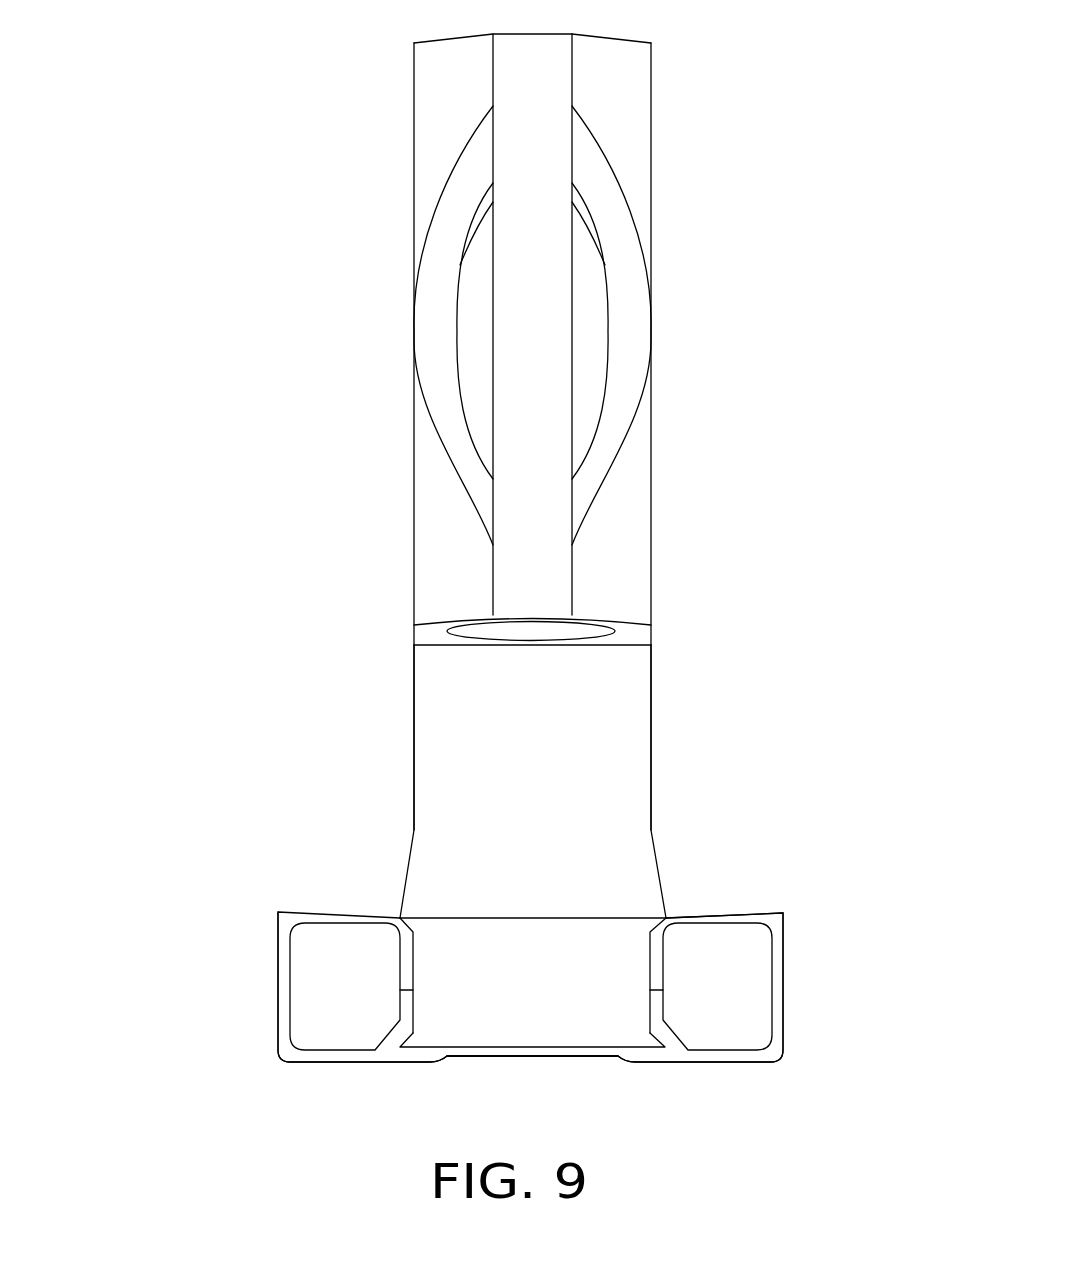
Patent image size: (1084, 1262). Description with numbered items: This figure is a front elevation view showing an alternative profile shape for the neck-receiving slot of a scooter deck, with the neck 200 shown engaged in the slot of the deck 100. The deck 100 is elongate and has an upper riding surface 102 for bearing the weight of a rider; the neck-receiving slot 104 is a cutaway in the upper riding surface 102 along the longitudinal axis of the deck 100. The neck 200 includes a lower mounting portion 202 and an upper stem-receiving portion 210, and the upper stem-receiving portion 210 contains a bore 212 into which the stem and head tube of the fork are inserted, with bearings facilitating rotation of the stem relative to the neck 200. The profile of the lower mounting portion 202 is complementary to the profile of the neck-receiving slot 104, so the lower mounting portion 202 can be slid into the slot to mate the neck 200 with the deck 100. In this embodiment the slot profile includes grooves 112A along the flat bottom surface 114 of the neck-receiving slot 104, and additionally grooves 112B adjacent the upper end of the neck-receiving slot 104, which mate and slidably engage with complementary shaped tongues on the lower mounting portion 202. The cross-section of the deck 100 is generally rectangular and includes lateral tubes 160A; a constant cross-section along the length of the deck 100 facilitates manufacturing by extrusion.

The upper stem-receiving portion 210 is at (430, 43).
The bore 212 is at (610, 633).
The neck 200 is at (413, 728).
The lower mounting portion 202 is at (390, 903).
The deck 100 is at (297, 897).
The upper riding surface 102 is at (722, 915).
The neck-receiving slot 104 is at (452, 1070).
The lateral tubes 160A is at (290, 989).
The grooves 112B is at (648, 927).
The grooves 112A is at (650, 1040).
The flat bottom surface 114 is at (587, 1048).